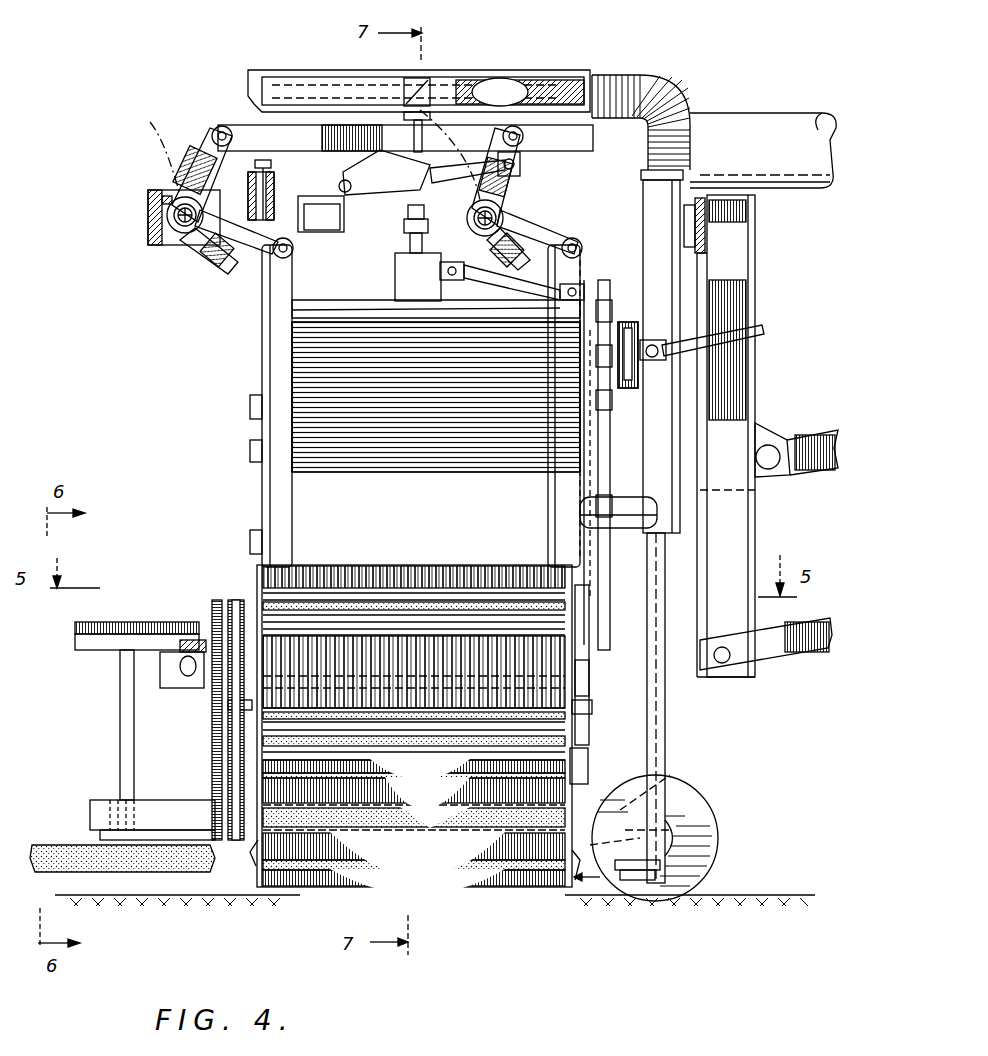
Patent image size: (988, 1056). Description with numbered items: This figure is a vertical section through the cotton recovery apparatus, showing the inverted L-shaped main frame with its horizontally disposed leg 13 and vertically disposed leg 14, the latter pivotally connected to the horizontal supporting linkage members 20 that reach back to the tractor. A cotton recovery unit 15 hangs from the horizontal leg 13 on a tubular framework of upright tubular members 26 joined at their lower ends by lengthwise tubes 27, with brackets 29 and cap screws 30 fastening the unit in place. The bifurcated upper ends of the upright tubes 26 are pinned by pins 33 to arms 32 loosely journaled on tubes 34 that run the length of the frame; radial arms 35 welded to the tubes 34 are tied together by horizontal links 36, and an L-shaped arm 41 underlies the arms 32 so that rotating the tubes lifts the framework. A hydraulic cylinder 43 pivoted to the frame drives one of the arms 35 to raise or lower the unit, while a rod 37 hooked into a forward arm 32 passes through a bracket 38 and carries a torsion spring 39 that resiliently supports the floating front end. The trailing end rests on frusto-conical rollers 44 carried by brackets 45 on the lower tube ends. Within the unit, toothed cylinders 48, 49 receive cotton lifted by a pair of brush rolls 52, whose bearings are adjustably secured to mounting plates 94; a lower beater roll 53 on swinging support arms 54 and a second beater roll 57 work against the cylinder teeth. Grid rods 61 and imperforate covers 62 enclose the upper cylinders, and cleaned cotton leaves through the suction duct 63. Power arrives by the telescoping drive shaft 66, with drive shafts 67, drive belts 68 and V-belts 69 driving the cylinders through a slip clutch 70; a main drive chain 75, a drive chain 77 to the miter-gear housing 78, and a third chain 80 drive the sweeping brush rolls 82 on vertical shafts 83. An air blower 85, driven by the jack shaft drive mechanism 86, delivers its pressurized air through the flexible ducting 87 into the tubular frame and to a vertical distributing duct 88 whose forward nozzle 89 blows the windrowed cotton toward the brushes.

The horizontally disposed leg 13 is at (140, 212).
The vertically disposed leg 14 is at (768, 272).
The cotton recovery unit 15 is at (250, 572).
The supporting linkage member 20 is at (808, 478).
The upright tubular member 26 is at (262, 506).
The lengthwise tube 27 is at (176, 784).
The bracket 29 is at (250, 428).
The cap screw 30 is at (245, 455).
The arm 32 is at (250, 250).
The pin 33 is at (290, 258).
The tube 34 is at (178, 238).
The arm 35 is at (212, 130).
The horizontal link 36 is at (322, 150).
The rod 37 is at (276, 222).
The bracket 38 is at (276, 180).
The torsion spring 39 is at (255, 163).
The L-shaped arm 41 is at (218, 262).
The hydraulic cylinder 43 is at (375, 160).
The frusto-conical roller 44 is at (698, 824).
The bracket 45 is at (668, 775).
The toothed cylinder 48 is at (350, 660).
The toothed cylinder 49 is at (305, 582).
The brush roll 52 is at (440, 860).
The lower beater roll 53 is at (585, 750).
The support arm 54 is at (260, 717).
The second beater roll 57 is at (438, 612).
The grid rod 61 is at (328, 465).
The imperforate cover 62 is at (746, 130).
The duct 63 is at (372, 288).
The telescoping drive shaft 66 is at (766, 331).
The drive shaft 67 is at (640, 345).
The drive belt 68 is at (620, 392).
The V-belt 69 is at (598, 456).
The slip clutch 70 is at (585, 662).
The main drive chain 75 is at (236, 763).
The drive chain 77 is at (212, 742).
The housing 78 is at (186, 680).
The third chain 80 is at (150, 622).
The sweeping brush roll 82 is at (128, 858).
The vertically disposed shaft 83 is at (120, 730).
The air blower 85 is at (478, 70).
The jack shaft drive mechanism 86 is at (412, 137).
The flexible hose 87 is at (638, 80).
The vertical distributing duct 88 is at (648, 586).
The nozzle 89 is at (630, 882).
The mounting plate 94 is at (246, 858).